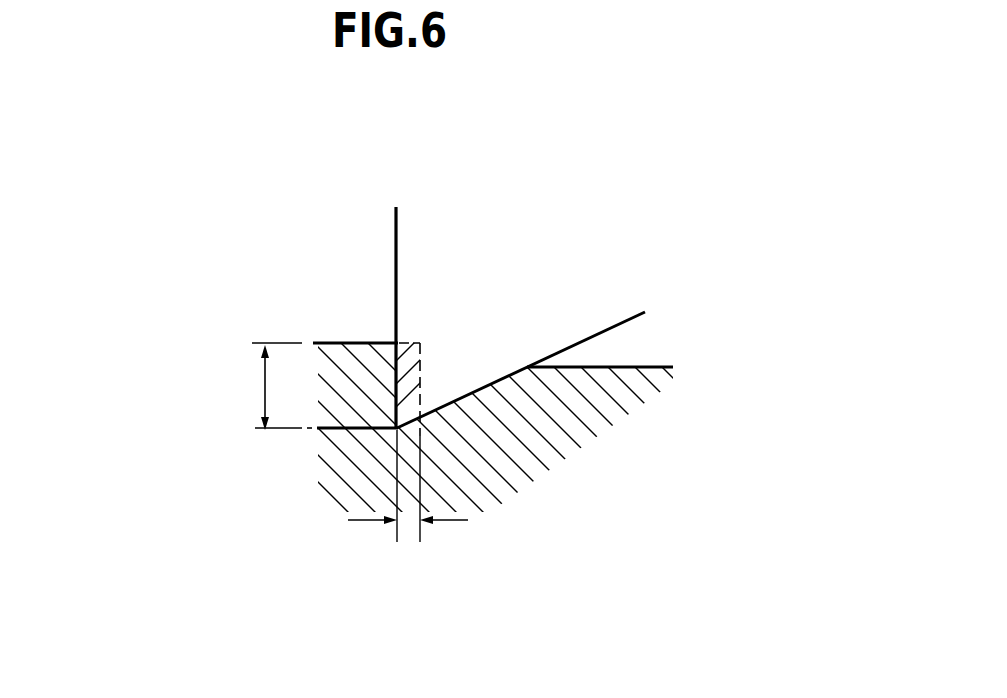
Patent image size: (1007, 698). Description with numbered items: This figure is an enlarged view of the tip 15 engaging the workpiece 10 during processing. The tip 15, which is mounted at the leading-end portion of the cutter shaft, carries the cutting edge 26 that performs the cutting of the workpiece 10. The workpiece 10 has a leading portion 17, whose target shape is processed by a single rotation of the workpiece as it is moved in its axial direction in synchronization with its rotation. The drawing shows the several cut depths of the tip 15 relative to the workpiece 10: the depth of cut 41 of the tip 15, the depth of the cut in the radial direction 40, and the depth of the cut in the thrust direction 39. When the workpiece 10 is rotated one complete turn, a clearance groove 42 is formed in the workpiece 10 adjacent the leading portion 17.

The workpiece 10 is at (643, 366).
The tip 15 is at (403, 233).
The leading portion 17 is at (413, 362).
The cutting edge 26 is at (393, 257).
The depth of the cut in the thrust direction 39 is at (350, 521).
The depth of the cut in the radial direction 40 is at (265, 388).
The depth of cut 41 is at (417, 395).
The clearance groove 42 is at (493, 384).